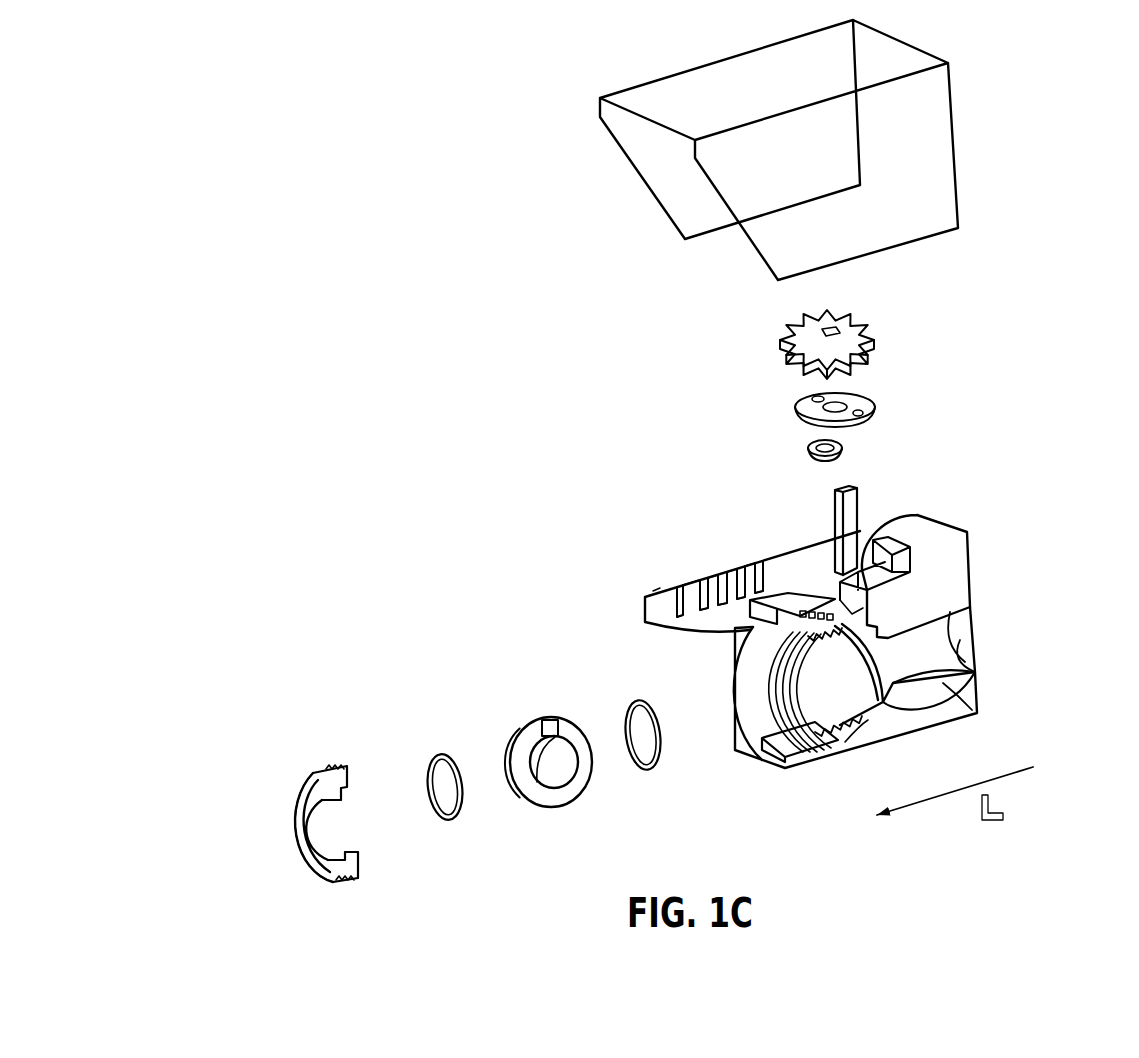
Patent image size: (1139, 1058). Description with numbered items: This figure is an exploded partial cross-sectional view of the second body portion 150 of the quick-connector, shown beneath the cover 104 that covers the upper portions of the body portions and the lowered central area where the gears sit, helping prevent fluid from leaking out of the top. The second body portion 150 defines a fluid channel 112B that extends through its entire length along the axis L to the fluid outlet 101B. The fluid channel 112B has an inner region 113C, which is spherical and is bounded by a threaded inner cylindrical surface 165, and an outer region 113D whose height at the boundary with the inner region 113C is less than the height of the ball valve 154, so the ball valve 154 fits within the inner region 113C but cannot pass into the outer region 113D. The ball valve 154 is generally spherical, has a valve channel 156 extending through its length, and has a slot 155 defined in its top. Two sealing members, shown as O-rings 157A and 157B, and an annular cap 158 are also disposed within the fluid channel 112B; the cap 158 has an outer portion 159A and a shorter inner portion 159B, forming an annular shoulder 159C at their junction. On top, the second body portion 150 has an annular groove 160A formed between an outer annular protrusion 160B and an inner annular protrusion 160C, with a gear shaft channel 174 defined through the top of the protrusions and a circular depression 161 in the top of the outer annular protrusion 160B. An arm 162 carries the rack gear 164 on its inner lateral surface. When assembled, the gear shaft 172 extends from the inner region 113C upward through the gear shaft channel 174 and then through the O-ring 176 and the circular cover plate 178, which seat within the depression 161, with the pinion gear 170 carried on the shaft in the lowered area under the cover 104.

The cover 104 is at (945, 183).
The second body portion 150 is at (455, 326).
The depression 161 is at (724, 498).
The arm 162 is at (688, 583).
The rack gear 164 is at (640, 601).
The annular groove 160A is at (852, 612).
The outer annular protrusion 160B is at (773, 592).
The inner annular protrusion 160C is at (770, 738).
The inner cylindrical surface 165 is at (786, 688).
The pinion gear 170 is at (875, 345).
The O-ring 176 is at (870, 412).
The cover plate 178 is at (840, 452).
The gear shaft 172 is at (858, 502).
The gear shaft channel 174 is at (920, 515).
The fluid outlet 101B is at (957, 638).
The fluid channel 112B is at (972, 655).
The inner region 113C is at (863, 733).
The outer region 113D is at (963, 720).
The ball valve 154 is at (540, 730).
The slot 155 is at (540, 717).
The valve channel 156 is at (560, 766).
The O-ring 157A is at (432, 745).
The O-ring 157B is at (628, 690).
The cap 158 is at (305, 770).
The outer portion 159A is at (350, 850).
The inner portion 159B is at (305, 845).
The annular shoulder 159C is at (350, 880).